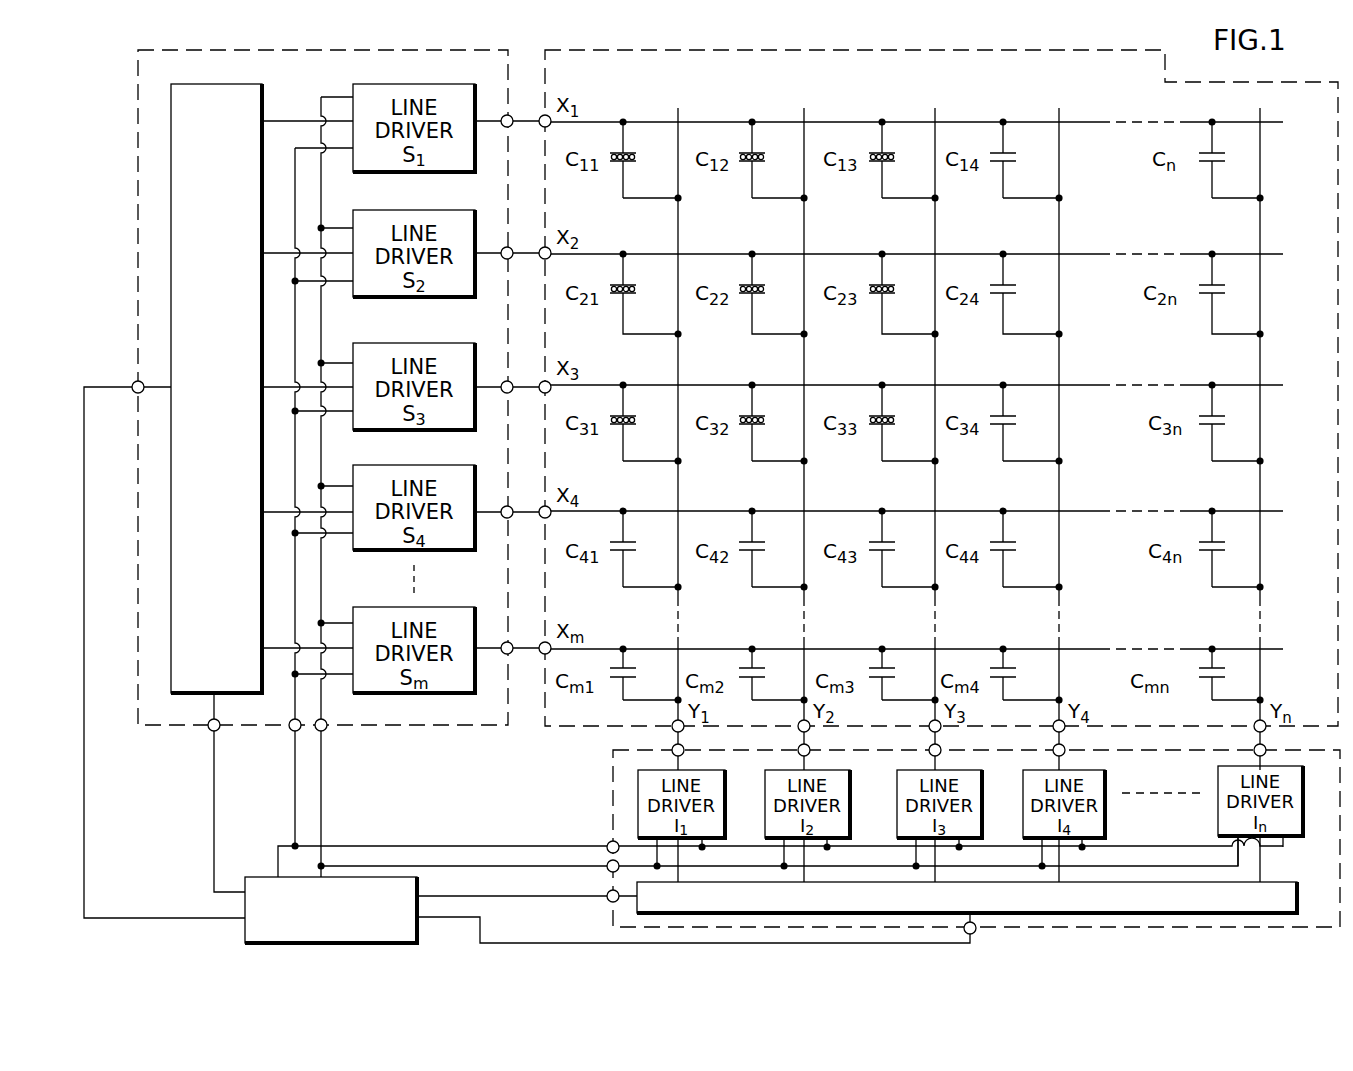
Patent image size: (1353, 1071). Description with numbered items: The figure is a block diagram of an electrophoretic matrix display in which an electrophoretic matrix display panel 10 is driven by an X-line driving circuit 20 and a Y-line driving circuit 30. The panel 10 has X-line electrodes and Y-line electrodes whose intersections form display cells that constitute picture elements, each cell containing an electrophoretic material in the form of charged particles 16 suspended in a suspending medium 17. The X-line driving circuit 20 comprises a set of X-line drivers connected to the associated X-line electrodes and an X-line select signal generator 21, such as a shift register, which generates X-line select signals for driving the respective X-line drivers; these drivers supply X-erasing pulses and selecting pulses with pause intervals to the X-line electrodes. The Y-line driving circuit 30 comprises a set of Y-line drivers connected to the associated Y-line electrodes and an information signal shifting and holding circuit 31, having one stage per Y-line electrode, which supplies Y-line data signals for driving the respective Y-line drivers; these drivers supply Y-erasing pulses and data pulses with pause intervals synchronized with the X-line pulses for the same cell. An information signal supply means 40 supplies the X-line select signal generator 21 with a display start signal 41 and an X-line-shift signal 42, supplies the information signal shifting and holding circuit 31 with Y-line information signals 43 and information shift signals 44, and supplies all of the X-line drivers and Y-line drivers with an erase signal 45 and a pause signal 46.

The electrophoretic matrix display panel 10 is at (588, 50).
The charged particles 16 is at (626, 156).
The suspending medium 17 is at (630, 163).
The X-line driving circuit 20 is at (440, 50).
The X-line select signal generator 21 is at (262, 84).
The Y-line driving circuit 30 is at (613, 773).
The information signal shifting and holding circuit 31 is at (1292, 882).
The information signal supply means 40 is at (245, 932).
The display start signal 41 is at (214, 778).
The X-line-shift signal 42 is at (84, 782).
The Y-line information signals 43 is at (442, 898).
The information shift signals 44 is at (500, 945).
The erase signal 45 is at (278, 870).
The pause signal 46 is at (322, 876).